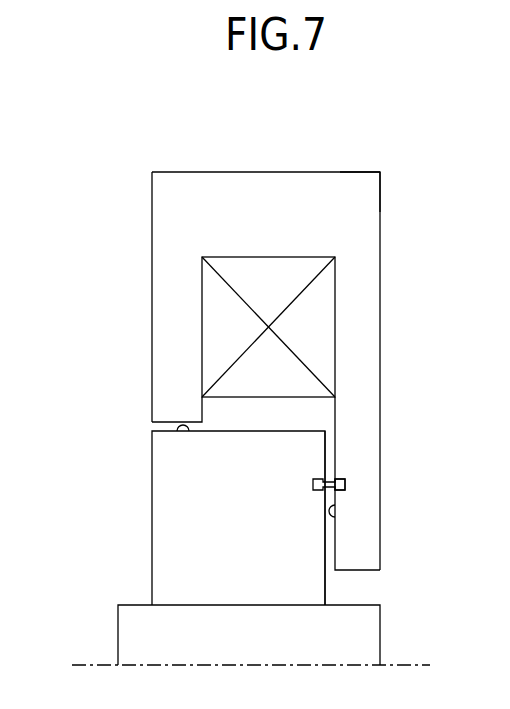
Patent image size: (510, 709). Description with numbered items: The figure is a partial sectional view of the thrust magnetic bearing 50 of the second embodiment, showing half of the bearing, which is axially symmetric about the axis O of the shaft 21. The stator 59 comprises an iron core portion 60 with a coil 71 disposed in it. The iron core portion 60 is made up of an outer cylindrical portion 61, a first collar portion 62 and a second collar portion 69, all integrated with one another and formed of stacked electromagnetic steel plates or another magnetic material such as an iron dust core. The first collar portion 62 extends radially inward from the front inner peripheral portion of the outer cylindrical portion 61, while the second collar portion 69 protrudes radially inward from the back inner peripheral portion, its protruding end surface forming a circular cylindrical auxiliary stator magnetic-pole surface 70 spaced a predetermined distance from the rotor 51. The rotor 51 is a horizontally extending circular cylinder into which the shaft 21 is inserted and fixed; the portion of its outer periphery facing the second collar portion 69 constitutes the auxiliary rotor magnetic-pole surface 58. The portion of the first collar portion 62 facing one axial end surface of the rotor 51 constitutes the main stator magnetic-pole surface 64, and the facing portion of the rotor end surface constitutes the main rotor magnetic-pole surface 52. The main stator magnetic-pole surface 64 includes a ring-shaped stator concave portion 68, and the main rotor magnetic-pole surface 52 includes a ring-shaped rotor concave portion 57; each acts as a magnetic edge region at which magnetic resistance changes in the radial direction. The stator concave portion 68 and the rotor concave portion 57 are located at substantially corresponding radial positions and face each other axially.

The thrust magnetic bearing 50 is at (254, 323).
The stator 59 is at (268, 170).
The iron core portion 60 is at (365, 170).
The outer cylindrical portion 61 is at (357, 202).
The first collar portion 62 is at (357, 333).
The second collar portion 69 is at (170, 302).
The auxiliary stator magnetic-pole surface 70 is at (157, 423).
The coil 71 is at (275, 275).
The rotor 51 is at (152, 492).
The main rotor magnetic-pole surface 52 is at (325, 540).
The auxiliary rotor magnetic-pole surface 58 is at (184, 428).
The rotor concave portion 57 is at (313, 485).
The stator concave portion 68 is at (342, 480).
The main stator magnetic-pole surface 64 is at (335, 515).
The shaft 21 is at (138, 625).
The axis O is at (83, 660).